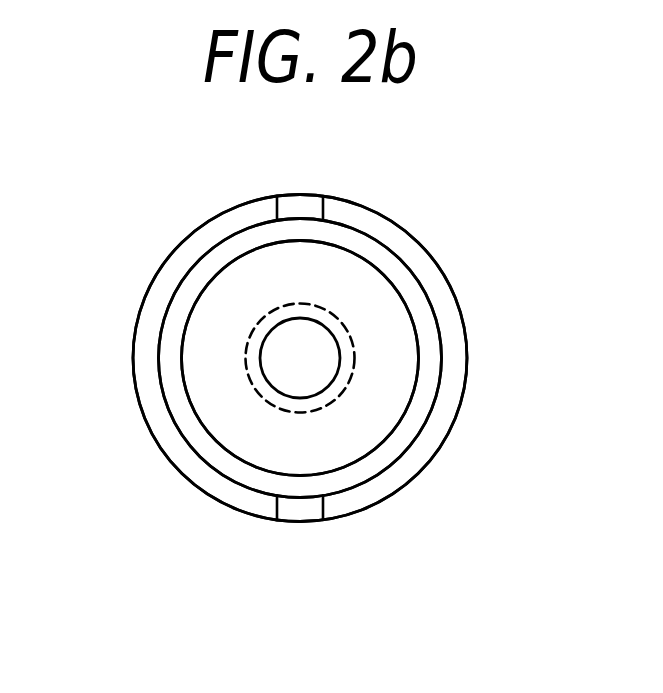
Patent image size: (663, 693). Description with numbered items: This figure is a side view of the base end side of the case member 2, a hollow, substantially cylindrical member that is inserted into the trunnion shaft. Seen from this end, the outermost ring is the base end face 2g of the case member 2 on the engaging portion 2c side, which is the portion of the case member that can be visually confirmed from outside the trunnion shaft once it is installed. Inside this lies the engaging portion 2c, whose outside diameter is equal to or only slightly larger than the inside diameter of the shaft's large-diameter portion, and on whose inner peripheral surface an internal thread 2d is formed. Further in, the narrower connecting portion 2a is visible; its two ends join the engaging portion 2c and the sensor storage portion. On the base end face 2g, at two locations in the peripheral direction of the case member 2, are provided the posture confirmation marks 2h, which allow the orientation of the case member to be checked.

The case member 2 is at (428, 209).
The connecting portion 2a is at (250, 347).
The engaging portion 2c is at (432, 359).
The internal thread 2d is at (385, 287).
The base end face 2g is at (423, 452).
The posture confirmation mark 2h is at (303, 203).